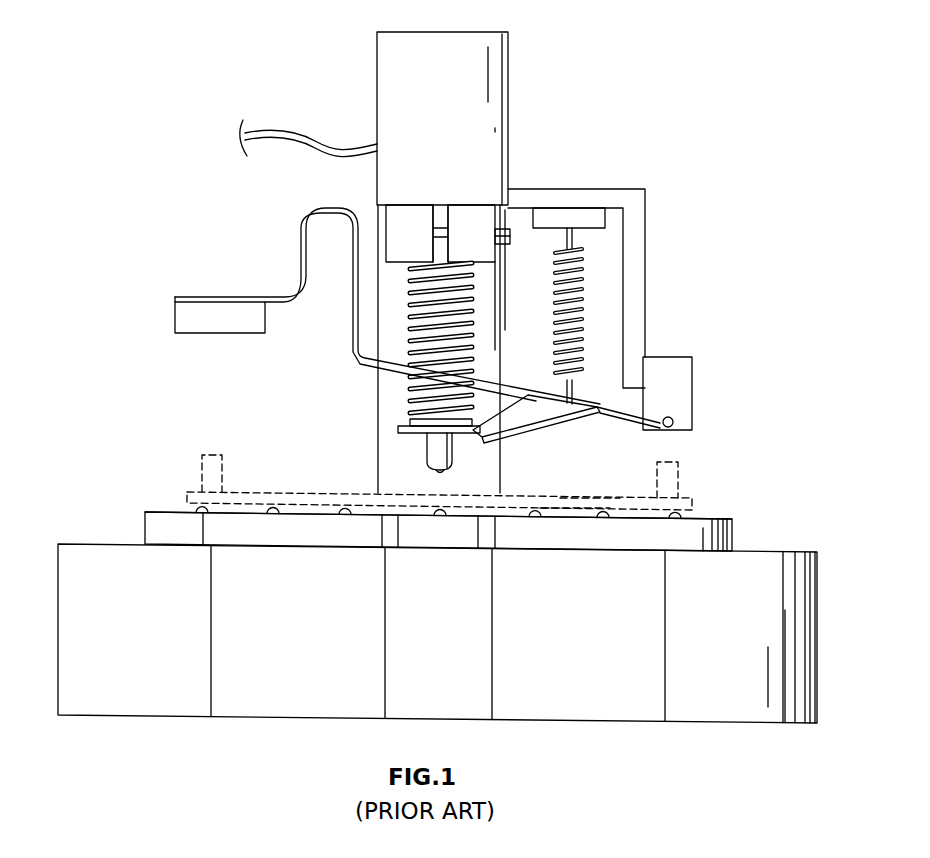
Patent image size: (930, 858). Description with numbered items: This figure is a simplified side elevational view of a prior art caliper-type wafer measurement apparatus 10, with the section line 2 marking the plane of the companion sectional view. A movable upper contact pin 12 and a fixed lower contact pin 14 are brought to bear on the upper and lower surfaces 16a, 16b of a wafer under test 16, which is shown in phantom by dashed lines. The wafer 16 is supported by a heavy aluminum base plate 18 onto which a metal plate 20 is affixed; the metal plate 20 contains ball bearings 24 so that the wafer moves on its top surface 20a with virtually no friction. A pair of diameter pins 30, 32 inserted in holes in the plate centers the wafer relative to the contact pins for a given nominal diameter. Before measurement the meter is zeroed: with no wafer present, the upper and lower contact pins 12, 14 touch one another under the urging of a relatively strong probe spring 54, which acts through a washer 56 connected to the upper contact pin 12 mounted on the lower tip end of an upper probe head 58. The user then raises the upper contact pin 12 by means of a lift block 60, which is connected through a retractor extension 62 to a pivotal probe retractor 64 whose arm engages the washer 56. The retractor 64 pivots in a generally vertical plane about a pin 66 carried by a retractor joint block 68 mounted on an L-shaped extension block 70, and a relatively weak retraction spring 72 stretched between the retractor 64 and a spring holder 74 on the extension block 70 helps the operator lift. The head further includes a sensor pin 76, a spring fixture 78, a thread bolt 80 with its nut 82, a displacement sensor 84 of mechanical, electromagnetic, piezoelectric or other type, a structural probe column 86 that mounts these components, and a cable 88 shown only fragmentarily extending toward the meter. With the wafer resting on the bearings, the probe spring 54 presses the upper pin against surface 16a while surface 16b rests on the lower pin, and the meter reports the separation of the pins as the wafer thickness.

The wafer measurement apparatus 10 is at (116, 336).
The section line 2 is at (32, 512).
The upper contact pin 12 is at (445, 474).
The lower contact pin 14 is at (441, 520).
The wafer under test 16 is at (287, 492).
The upper surface 16a is at (571, 498).
The lower surface 16b is at (572, 512).
The base plate 18 is at (788, 631).
The metal plate 20 is at (733, 538).
The support plate top surface 20a is at (712, 516).
The ball bearings 24 is at (273, 518).
The diameter pin 30 is at (222, 465).
The diameter pin 32 is at (680, 476).
The probe spring 54 is at (410, 396).
The washer 56 is at (398, 430).
The upper probe head 58 is at (428, 452).
The lift block 60 is at (222, 300).
The retractor extension 62 is at (307, 212).
The probe retractor 64 is at (543, 410).
The pin 66 is at (673, 421).
The retractor joint block 68 is at (680, 373).
The extension block 70 is at (646, 236).
The retraction spring 72 is at (583, 297).
The spring holder 74 is at (597, 217).
The sensor pin 76 is at (475, 217).
The spring fixture 78 is at (413, 217).
The thread bolt 80 is at (437, 217).
The nut 82 is at (510, 238).
The displacement sensor 84 is at (508, 84).
The probe column 86 is at (378, 318).
The cable 88 is at (312, 133).